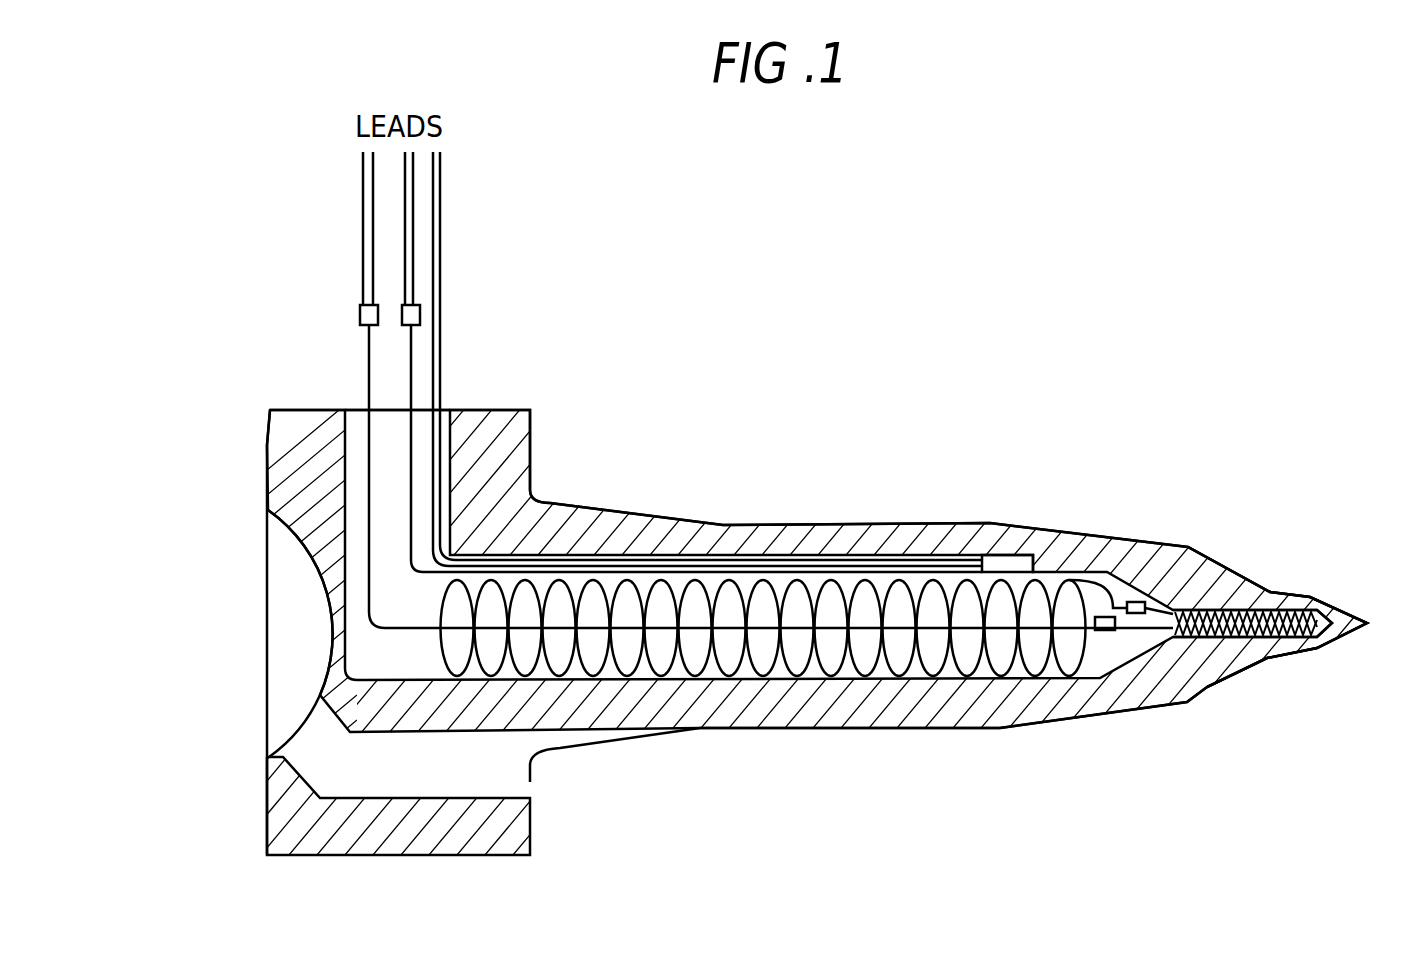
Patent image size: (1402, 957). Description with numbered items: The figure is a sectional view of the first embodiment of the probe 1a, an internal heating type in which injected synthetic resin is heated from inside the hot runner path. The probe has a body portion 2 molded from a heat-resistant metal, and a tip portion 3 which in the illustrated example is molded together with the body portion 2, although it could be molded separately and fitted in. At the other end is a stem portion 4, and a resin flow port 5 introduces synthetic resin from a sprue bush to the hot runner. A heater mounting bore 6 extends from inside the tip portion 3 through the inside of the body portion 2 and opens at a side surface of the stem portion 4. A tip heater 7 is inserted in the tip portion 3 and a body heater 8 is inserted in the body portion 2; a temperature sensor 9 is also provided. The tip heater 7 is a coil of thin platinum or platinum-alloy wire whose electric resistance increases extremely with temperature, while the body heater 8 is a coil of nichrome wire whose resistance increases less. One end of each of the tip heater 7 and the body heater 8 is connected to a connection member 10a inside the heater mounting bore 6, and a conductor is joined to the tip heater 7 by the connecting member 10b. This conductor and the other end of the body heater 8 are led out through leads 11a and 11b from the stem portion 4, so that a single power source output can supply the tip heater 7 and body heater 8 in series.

The probe 1a is at (612, 478).
The body portion 2 is at (757, 522).
The tip portion 3 is at (1273, 597).
The stem portion 4 is at (280, 452).
The resin flow port 5 is at (515, 773).
The heater mounting bore 6 is at (280, 631).
The tip heater 7 is at (1232, 610).
The body heater 8 is at (863, 680).
The temperature sensor 9 is at (1009, 554).
The connection member 10a is at (1137, 602).
The connecting member 10b is at (1106, 631).
The lead 11a is at (368, 345).
The lead 11b is at (412, 345).